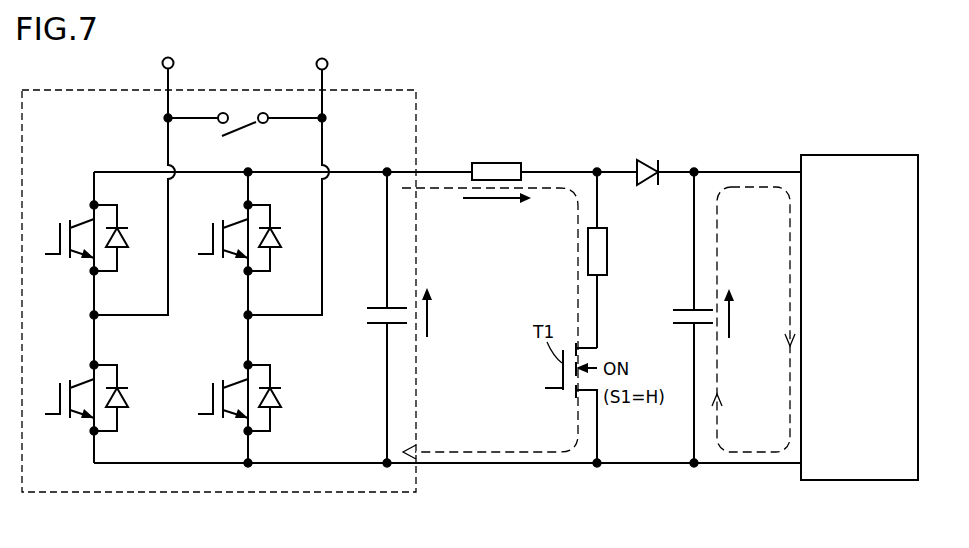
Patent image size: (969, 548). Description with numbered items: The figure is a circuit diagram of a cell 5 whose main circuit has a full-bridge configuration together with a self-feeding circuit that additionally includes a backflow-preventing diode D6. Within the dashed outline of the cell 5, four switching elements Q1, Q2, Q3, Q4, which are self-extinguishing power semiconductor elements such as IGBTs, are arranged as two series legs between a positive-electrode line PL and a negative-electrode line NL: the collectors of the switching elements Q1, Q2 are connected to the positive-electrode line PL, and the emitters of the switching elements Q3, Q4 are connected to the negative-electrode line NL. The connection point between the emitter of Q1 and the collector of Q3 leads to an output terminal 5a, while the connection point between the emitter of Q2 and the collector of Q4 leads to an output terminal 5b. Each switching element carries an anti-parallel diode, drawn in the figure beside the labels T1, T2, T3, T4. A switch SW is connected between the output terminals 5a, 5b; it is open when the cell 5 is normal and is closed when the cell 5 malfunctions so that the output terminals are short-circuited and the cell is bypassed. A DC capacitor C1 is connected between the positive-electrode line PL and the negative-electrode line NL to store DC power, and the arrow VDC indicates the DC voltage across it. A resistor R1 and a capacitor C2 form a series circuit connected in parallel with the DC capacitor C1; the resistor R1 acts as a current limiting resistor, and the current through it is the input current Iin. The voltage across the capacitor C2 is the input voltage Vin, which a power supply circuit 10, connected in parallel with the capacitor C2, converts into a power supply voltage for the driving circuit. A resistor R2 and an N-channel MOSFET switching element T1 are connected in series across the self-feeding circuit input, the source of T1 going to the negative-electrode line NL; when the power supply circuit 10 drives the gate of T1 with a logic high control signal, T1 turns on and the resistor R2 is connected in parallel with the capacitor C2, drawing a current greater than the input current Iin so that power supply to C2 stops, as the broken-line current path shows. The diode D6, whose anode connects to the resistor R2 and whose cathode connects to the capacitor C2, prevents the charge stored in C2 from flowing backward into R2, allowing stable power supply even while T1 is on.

The cell 5 is at (383, 492).
The output terminal 5a is at (165, 57).
The output terminal 5b is at (326, 57).
The switch SW is at (240, 128).
The switching element Q1 is at (60, 230).
The switching element Q2 is at (213, 230).
The switching element Q3 is at (60, 390).
The switching element Q4 is at (213, 390).
The switching element T1 is at (120, 248).
The diode T2 is at (273, 248).
The diode T3 is at (120, 408).
The diode T4 is at (273, 408).
The positive-electrode line PL is at (350, 172).
The negative-electrode line NL is at (487, 463).
The DC capacitor C1 is at (377, 327).
The capacitor C2 is at (690, 328).
The resistor R1 is at (497, 163).
The resistor R2 is at (607, 249).
The diode D6 is at (697, 186).
The DC voltage VDC is at (448, 312).
The input current Iin is at (490, 323).
The input voltage Vin is at (753, 319).
The power supply circuit 10 is at (870, 480).